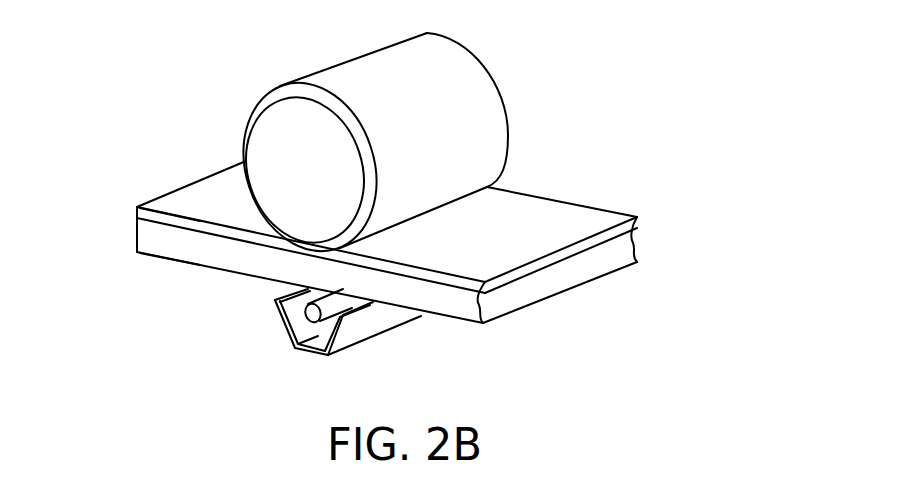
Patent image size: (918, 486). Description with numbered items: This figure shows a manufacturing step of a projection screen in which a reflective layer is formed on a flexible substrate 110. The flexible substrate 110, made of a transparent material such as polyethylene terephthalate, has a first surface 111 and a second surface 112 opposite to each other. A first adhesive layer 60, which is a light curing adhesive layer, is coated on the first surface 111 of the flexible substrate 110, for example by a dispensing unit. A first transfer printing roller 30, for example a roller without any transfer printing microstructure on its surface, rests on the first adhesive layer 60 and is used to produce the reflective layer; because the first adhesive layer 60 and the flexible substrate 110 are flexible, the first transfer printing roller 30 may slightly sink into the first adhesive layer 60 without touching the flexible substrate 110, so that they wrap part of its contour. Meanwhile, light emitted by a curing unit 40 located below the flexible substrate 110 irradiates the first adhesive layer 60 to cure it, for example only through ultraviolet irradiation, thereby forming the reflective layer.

The first transfer printing roller 30 is at (502, 117).
The curing unit 40 is at (313, 313).
The first adhesive layer 60 is at (138, 214).
The flexible substrate 110 is at (268, 265).
The first surface 111 is at (168, 222).
The second surface 112 is at (163, 258).